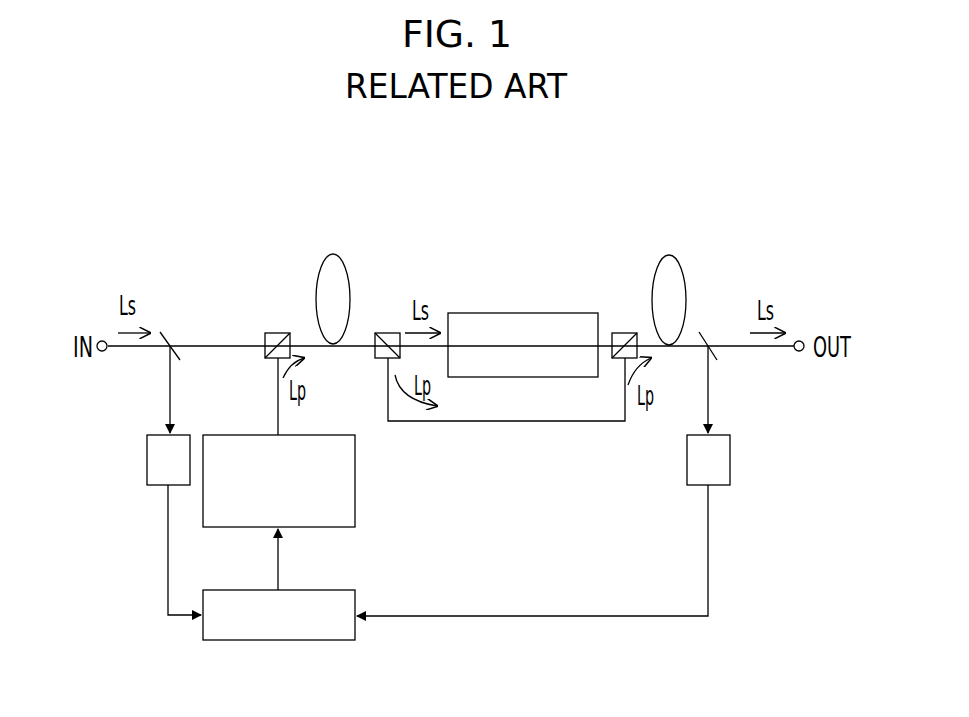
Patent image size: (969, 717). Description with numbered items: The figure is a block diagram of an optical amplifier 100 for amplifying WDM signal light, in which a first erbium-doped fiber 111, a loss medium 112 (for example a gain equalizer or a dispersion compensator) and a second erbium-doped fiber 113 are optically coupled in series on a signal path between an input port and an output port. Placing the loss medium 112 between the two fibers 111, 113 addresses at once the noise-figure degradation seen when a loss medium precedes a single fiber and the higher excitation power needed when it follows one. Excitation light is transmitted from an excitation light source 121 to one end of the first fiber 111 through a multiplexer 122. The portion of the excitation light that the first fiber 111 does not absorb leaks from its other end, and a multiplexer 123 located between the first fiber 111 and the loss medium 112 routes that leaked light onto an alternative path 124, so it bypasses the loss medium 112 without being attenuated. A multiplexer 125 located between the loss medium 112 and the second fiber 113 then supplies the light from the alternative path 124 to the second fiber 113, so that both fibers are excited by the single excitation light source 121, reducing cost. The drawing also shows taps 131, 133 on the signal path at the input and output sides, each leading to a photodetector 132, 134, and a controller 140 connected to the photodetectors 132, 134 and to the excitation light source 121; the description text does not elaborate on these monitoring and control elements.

The optical amplifier (related art) 100 is at (210, 220).
The first erbium-doped fiber 111 is at (333, 255).
The loss medium 112 is at (515, 313).
The second erbium-doped fiber 113 is at (668, 255).
The excitation light source 121 is at (355, 485).
The multiplexer 122 is at (269, 333).
The multiplexer 123 is at (386, 333).
The alternative path 124 is at (515, 421).
The multiplexer 125 is at (623, 333).
The optical tap 131 is at (172, 338).
The photodetector 132 is at (147, 464).
The optical tap 133 is at (708, 338).
The photodetector 134 is at (730, 463).
The controller 140 is at (290, 640).